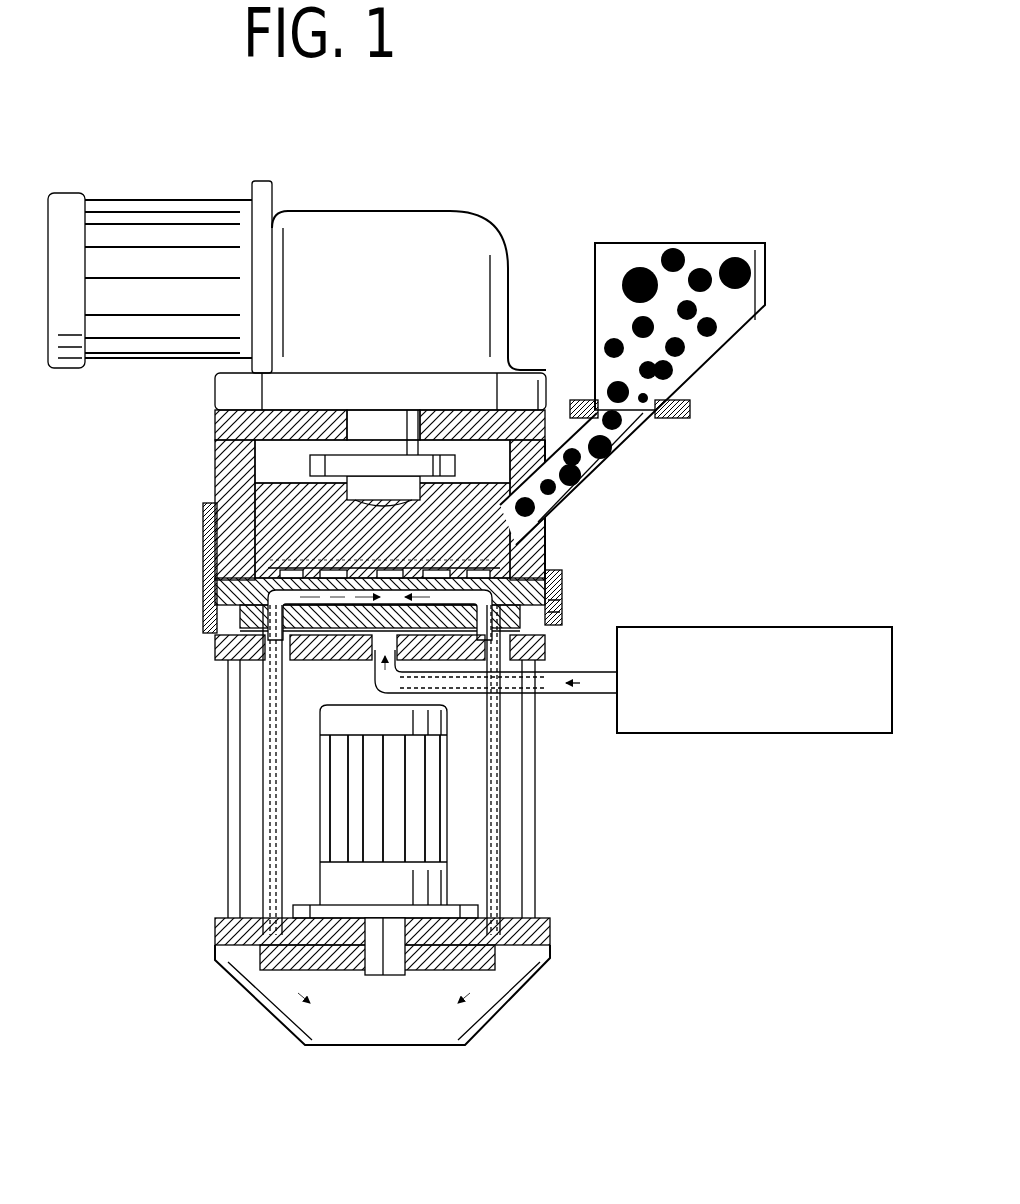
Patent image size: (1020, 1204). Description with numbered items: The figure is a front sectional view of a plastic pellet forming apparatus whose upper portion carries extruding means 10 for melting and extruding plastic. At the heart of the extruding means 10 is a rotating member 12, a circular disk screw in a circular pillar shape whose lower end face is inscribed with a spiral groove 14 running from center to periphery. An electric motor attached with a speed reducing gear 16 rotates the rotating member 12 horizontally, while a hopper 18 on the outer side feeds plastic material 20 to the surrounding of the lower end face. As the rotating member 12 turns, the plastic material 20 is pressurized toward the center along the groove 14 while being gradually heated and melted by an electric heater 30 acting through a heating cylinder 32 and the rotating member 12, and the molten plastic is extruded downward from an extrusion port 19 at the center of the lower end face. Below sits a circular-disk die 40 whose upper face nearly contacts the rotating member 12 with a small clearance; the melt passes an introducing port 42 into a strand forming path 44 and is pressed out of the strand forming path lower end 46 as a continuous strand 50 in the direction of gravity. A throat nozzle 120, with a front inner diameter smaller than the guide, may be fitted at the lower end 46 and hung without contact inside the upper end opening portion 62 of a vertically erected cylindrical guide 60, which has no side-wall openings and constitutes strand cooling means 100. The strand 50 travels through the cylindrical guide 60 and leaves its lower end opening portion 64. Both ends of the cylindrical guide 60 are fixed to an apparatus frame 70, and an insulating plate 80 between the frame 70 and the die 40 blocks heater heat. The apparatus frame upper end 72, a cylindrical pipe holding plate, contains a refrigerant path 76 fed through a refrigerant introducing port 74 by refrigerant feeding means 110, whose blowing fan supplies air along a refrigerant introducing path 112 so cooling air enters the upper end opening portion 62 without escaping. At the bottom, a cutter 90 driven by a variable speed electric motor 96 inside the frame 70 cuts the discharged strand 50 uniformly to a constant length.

The extruding means 10 is at (212, 475).
The rotating member 12 is at (258, 508).
The groove 14 is at (368, 578).
The electric motor attached with a speed reducing gear 16 is at (427, 205).
The hopper 18 is at (740, 345).
The extrusion port 19 is at (408, 575).
The plastic material 20 is at (673, 252).
The electric heater 30 is at (207, 563).
The heating cylinder 32 is at (215, 487).
The die 40 is at (218, 600).
The introducing port 42 is at (345, 625).
The strand forming path 44 is at (548, 553).
The strand forming path lower end 46 is at (560, 582).
The strand 50 is at (270, 838).
The cylindrical guide 60 is at (266, 865).
The upper end opening portion 62 is at (262, 660).
The lower end opening portion 64 is at (262, 935).
The apparatus frame 70 is at (537, 843).
The apparatus frame upper end 72 is at (222, 648).
The refrigerant introducing port 74 is at (378, 665).
The refrigerant path 76 is at (330, 578).
The insulating plate 80 is at (545, 632).
The cutter 90 is at (448, 972).
The variable speed electric motor 96 is at (320, 752).
The strand cooling means 100 is at (748, 622).
The refrigerant feeding means 110 is at (825, 627).
The refrigerant introducing path 112 is at (585, 695).
The throat nozzle 120 is at (562, 607).